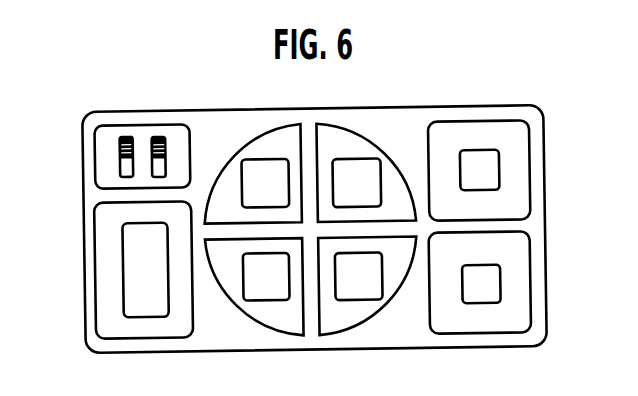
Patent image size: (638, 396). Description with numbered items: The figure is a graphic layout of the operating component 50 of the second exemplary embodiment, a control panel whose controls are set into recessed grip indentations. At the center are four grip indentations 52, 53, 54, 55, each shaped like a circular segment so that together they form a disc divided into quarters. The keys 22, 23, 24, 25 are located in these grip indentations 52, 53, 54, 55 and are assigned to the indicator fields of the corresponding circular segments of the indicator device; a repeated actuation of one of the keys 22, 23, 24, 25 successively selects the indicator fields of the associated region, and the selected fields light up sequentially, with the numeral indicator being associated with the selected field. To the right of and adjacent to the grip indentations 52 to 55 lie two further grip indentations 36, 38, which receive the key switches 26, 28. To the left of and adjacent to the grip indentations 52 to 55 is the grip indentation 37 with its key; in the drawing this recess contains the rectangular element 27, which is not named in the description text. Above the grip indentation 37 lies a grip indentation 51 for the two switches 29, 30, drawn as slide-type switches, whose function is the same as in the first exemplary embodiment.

The operating component 50 is at (212, 335).
The grip indentation 51 is at (106, 142).
The switch 30 is at (127, 138).
The switch 29 is at (160, 138).
The grip indentation 37 is at (113, 308).
The display window 27 is at (137, 260).
The grip indentation 52 is at (292, 135).
The grip indentation 53 is at (331, 138).
The grip indentation 54 is at (290, 315).
The grip indentation 55 is at (335, 317).
The key 22 is at (257, 172).
The key 23 is at (366, 173).
The key 24 is at (262, 285).
The key 25 is at (365, 283).
The grip indentation 36 is at (448, 135).
The key switch 26 is at (482, 163).
The grip indentation 38 is at (455, 318).
The key switch 28 is at (487, 288).